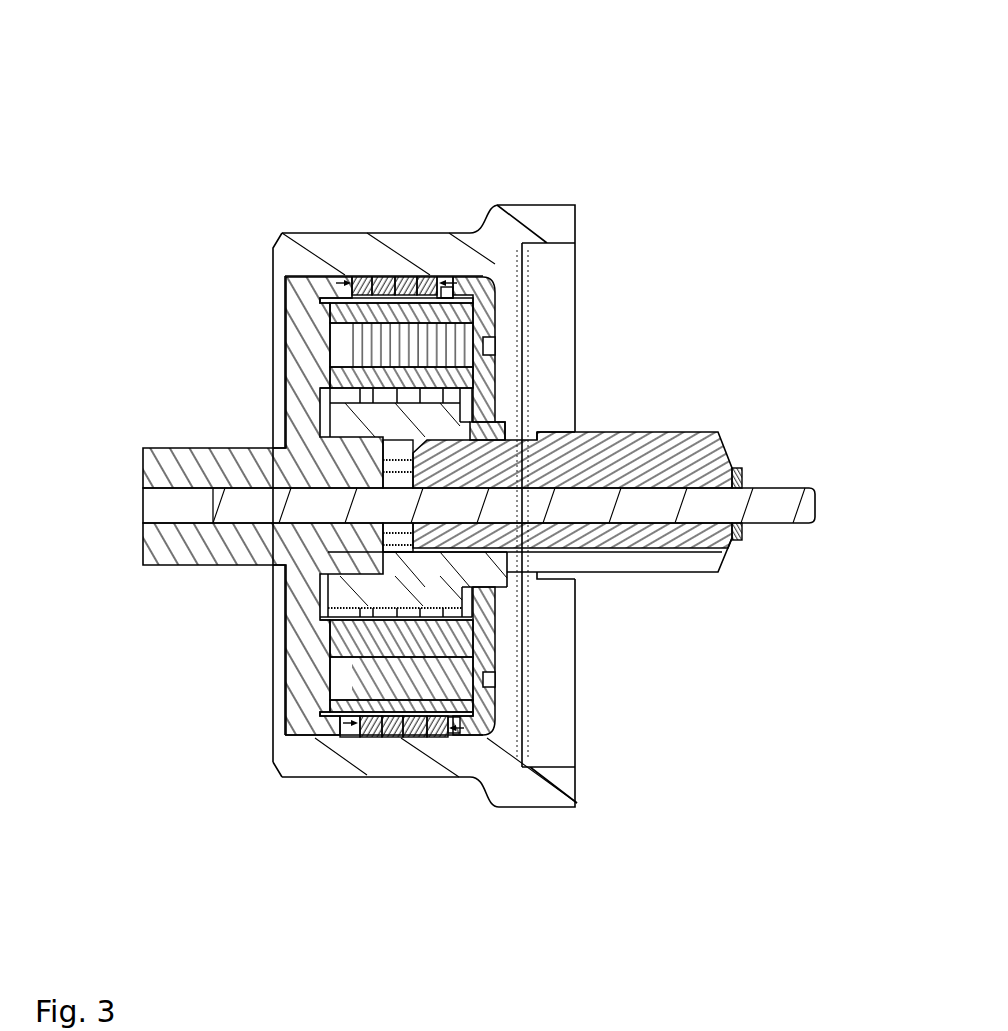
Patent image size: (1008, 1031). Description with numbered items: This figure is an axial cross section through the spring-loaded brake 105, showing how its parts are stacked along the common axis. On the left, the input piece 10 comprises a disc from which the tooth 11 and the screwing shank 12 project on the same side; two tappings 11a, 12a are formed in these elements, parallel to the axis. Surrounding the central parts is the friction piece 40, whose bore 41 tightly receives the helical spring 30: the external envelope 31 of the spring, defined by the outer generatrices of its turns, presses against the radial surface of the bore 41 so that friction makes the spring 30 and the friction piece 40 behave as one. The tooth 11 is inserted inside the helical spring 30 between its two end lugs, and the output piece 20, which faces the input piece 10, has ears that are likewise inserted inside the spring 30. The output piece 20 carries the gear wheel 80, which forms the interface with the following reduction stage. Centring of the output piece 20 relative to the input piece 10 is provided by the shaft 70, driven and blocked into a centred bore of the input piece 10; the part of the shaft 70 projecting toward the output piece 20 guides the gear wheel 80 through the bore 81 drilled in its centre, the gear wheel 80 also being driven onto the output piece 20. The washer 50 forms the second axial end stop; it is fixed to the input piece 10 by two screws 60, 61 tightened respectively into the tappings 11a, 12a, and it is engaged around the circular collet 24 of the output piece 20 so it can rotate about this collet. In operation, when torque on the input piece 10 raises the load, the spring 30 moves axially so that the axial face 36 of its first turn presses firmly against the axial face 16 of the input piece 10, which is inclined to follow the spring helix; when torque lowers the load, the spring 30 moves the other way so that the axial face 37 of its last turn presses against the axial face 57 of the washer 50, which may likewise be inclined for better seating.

The spring-loaded brake 105 is at (195, 108).
The input piece 10 is at (282, 448).
The tooth 11 is at (360, 638).
The tapping 11a is at (342, 682).
The screwing shank 12 is at (353, 378).
The tapping 12a is at (343, 335).
The axial face 16 is at (362, 738).
The output piece 20 is at (358, 592).
The circular collet 24 is at (495, 430).
The helical spring 30 is at (389, 198).
The external envelope 31 is at (387, 277).
The axial face 36 is at (342, 280).
The axial face 37 is at (455, 277).
The friction piece 40 is at (547, 219).
The bore 41 is at (277, 279).
The washer 50 is at (580, 322).
The axial face 57 is at (428, 738).
The screw 60 is at (492, 702).
The screw 61 is at (479, 373).
The shaft 70 is at (773, 503).
The gear wheel 80 is at (707, 450).
The bore 81 is at (735, 540).